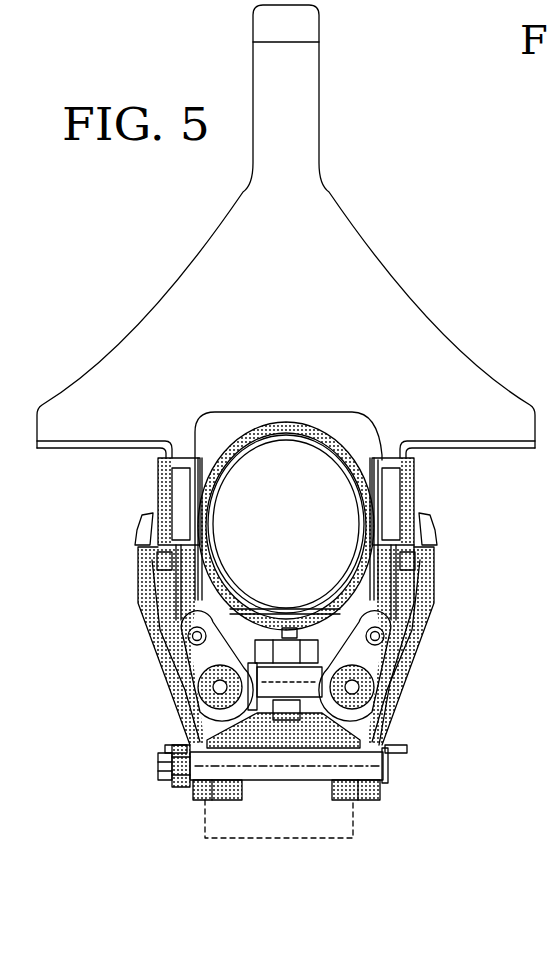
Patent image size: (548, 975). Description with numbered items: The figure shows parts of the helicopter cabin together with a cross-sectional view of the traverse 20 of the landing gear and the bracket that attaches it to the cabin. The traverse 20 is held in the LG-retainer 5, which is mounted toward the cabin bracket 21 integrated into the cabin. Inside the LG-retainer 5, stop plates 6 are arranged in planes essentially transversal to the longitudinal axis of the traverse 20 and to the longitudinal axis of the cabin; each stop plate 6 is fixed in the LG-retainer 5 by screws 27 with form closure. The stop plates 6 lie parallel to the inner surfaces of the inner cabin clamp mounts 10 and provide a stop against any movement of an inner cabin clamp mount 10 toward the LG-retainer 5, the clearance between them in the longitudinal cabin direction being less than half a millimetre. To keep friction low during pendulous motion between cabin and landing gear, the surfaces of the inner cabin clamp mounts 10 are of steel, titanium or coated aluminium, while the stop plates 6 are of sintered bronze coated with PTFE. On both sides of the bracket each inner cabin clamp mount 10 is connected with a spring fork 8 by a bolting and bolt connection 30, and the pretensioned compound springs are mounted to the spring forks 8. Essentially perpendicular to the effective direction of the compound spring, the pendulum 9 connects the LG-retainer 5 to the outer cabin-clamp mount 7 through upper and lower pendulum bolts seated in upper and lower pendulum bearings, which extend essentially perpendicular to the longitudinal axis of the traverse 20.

The cabin bracket 21 is at (363, 267).
The LG-retainer 5 is at (353, 457).
The screws 27 is at (350, 455).
The inner cabin clamp mount 10 is at (185, 457).
The outer cabin-clamp mount 7 is at (160, 470).
The traverse 20 is at (190, 495).
The stop plate 6 is at (137, 543).
The bolting and bolt connection 30 is at (187, 638).
The spring fork 8 is at (202, 664).
The pendulum 9 is at (300, 743).